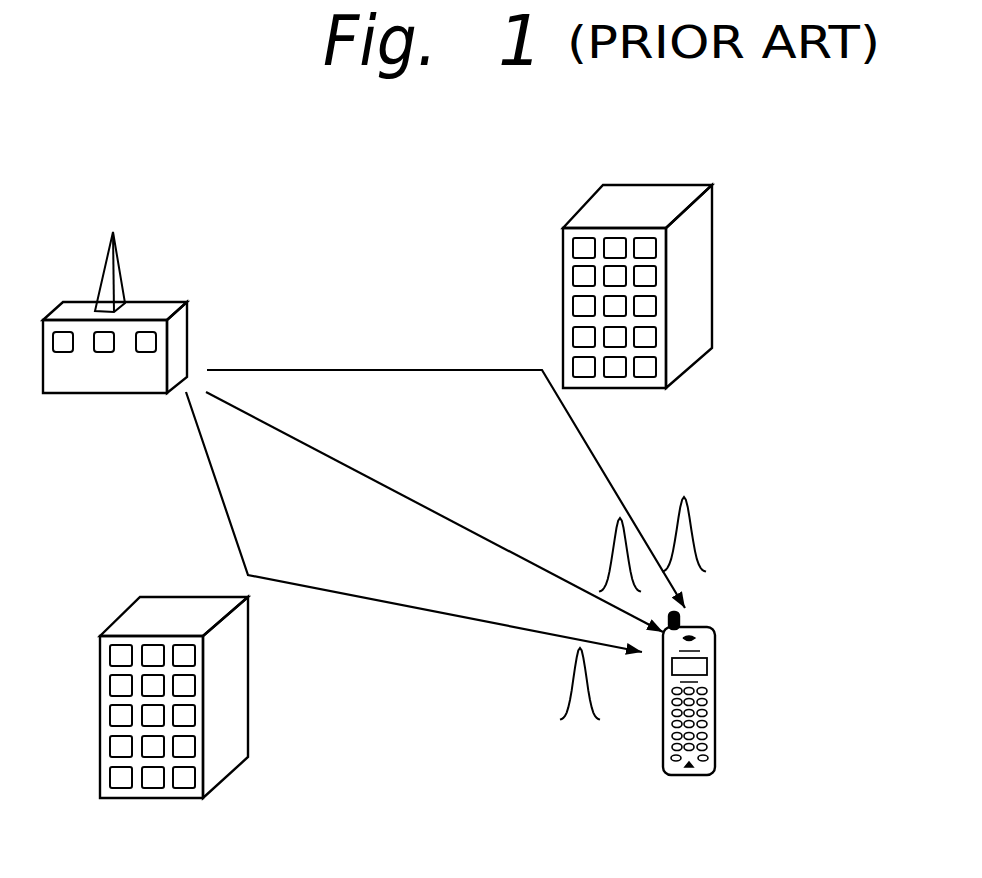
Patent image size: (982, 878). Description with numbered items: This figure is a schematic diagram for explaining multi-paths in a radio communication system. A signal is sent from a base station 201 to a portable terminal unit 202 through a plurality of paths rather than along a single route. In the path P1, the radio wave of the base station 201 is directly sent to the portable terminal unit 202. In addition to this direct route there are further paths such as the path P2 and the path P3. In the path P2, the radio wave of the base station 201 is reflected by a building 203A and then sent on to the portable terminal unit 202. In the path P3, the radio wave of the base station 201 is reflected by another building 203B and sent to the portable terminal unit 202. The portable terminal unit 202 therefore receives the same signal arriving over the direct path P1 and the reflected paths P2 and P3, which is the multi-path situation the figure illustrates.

The base station 201 is at (168, 300).
The portable terminal unit 202 is at (712, 710).
The building 203A is at (140, 620).
The building 203B is at (687, 267).
The path P1 is at (435, 511).
The path P2 is at (215, 483).
The path P3 is at (592, 452).